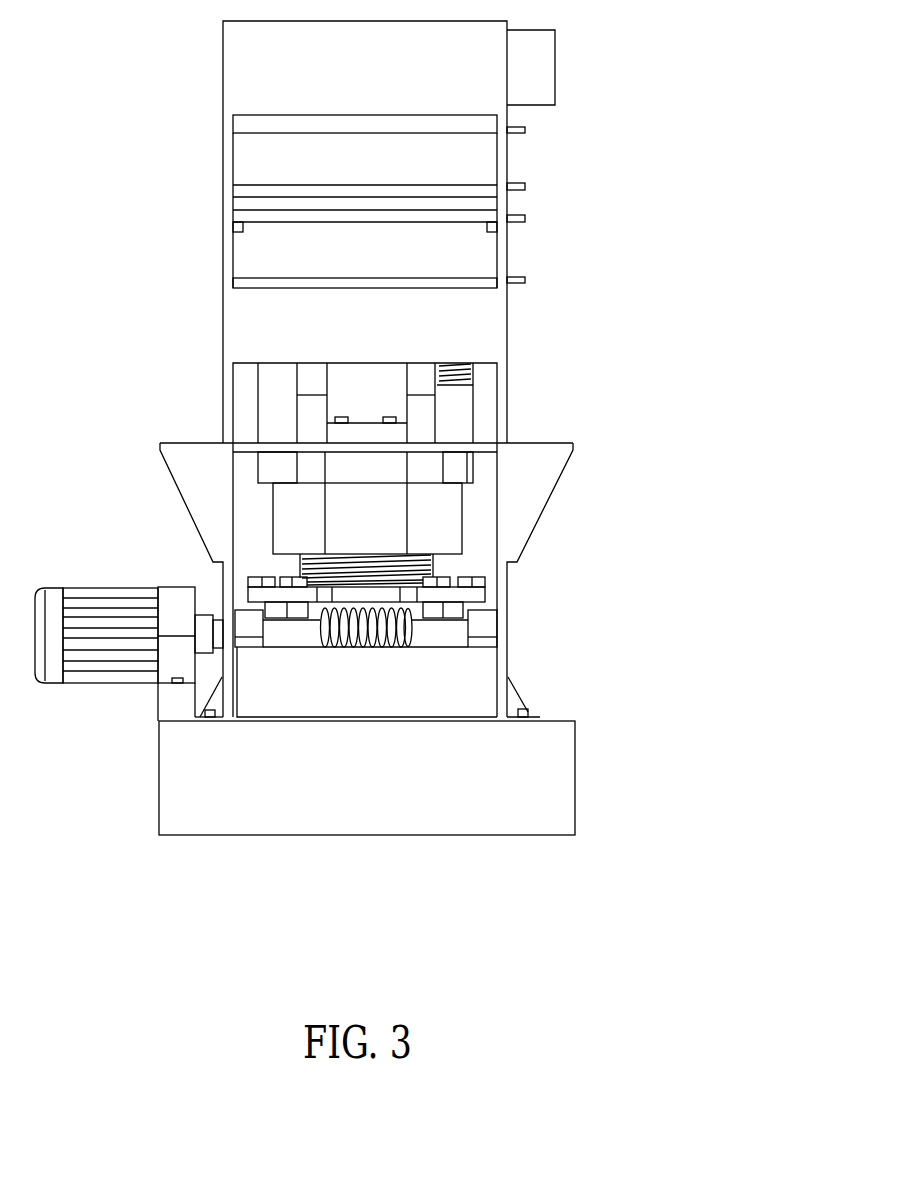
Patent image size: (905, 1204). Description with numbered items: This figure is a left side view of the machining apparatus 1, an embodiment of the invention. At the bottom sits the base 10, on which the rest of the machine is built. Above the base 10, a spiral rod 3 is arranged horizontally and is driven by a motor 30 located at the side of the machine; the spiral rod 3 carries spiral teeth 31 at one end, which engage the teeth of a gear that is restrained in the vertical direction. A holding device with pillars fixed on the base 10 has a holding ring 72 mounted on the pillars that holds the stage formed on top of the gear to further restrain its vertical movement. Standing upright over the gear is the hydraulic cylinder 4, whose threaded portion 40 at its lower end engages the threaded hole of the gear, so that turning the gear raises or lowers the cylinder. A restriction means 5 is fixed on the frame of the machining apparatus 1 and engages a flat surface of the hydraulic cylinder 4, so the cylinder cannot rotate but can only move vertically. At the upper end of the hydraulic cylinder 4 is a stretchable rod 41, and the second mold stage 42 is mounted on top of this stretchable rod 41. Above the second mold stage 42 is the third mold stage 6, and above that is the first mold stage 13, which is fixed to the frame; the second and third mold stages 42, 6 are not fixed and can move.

The machining apparatus 1 is at (677, 337).
The first mold stage 13 is at (483, 123).
The third mold stage 6 is at (273, 205).
The second mold stage 42 is at (483, 283).
The stretchable rod 41 is at (380, 377).
The restriction means 5 is at (340, 432).
The hydraulic cylinder 4 is at (438, 508).
The threaded portion 40 is at (433, 565).
The holding ring 72 is at (473, 593).
The spiral rod 3 is at (455, 629).
The spiral teeth 31 is at (367, 647).
The motor 30 is at (107, 600).
The base 10 is at (555, 757).